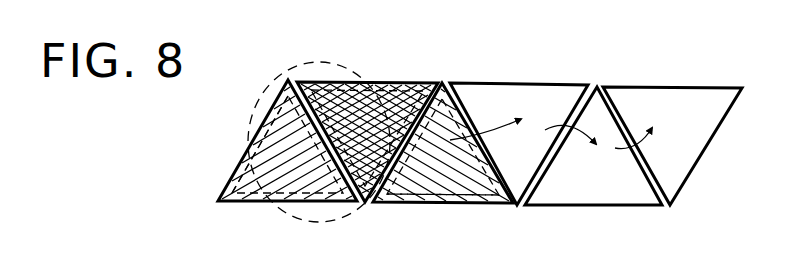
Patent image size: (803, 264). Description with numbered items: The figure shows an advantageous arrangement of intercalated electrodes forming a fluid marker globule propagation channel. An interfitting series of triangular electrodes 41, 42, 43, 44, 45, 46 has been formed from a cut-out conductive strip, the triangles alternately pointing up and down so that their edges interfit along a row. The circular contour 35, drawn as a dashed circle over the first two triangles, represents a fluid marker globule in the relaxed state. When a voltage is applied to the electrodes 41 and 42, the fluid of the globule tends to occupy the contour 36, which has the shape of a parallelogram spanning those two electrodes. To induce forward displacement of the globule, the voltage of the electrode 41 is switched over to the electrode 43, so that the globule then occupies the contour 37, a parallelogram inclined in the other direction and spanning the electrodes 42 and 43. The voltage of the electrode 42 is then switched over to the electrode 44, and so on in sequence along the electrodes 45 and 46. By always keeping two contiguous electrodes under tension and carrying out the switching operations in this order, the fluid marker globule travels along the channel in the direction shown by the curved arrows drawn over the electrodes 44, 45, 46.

The circular contour 35 is at (296, 66).
The parallelogram contour 36 is at (243, 160).
The parallelogram contour inclined in the other direction 37 is at (432, 183).
The triangular electrode 41 is at (249, 204).
The triangular electrode 42 is at (396, 82).
The triangular electrode 43 is at (487, 206).
The triangular electrode 44 is at (512, 83).
The triangular electrode 45 is at (610, 207).
The triangular electrode 46 is at (634, 87).